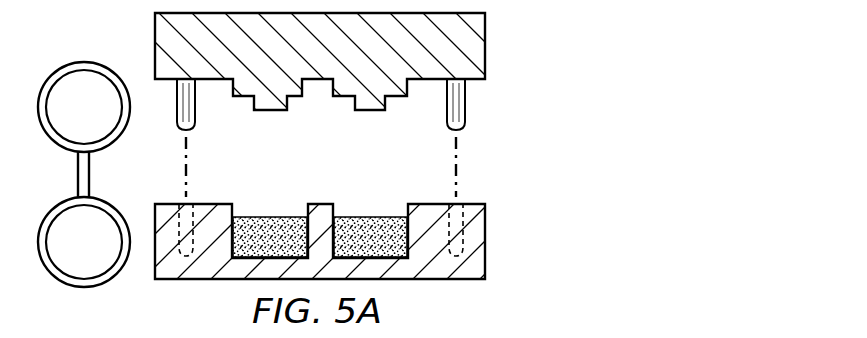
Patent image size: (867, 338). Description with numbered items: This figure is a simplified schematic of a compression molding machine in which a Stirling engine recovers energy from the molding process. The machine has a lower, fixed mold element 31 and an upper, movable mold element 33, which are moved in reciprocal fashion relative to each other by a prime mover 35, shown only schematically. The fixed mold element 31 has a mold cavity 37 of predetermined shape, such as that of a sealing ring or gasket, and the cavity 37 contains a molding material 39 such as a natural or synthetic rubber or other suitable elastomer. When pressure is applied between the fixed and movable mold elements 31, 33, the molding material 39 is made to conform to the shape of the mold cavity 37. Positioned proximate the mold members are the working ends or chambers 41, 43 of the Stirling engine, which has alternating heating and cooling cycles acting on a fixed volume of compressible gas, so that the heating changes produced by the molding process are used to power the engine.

The fixed mold element 31 is at (485, 255).
The movable mold element 33 is at (485, 47).
The prime mover 35 is at (464, 102).
The mold cavity 37 is at (267, 214).
The molding material 39 is at (375, 215).
The working end or chamber 41 is at (71, 117).
The working end or chamber 43 is at (71, 252).